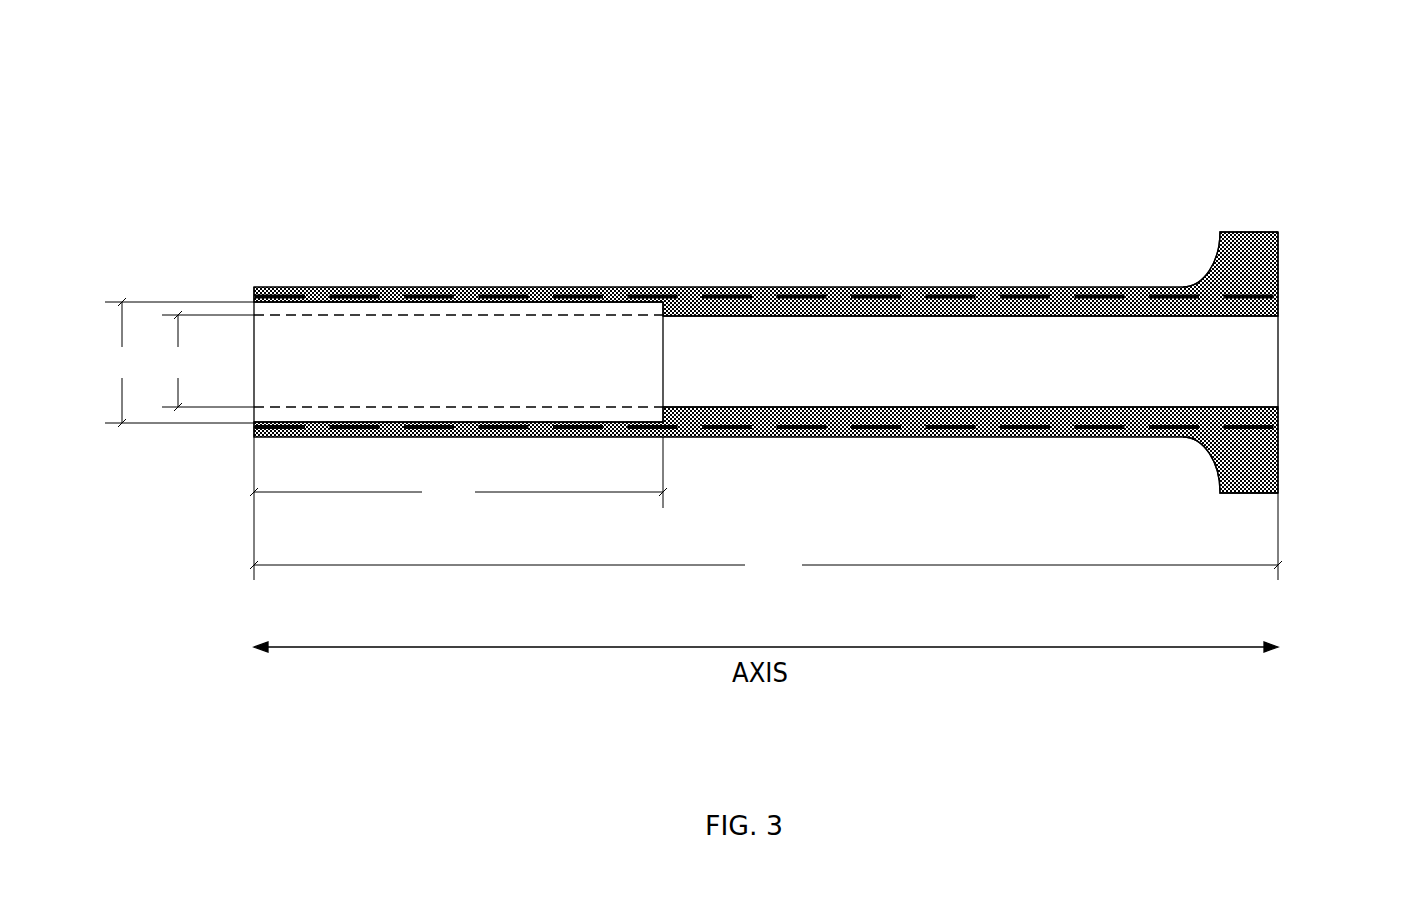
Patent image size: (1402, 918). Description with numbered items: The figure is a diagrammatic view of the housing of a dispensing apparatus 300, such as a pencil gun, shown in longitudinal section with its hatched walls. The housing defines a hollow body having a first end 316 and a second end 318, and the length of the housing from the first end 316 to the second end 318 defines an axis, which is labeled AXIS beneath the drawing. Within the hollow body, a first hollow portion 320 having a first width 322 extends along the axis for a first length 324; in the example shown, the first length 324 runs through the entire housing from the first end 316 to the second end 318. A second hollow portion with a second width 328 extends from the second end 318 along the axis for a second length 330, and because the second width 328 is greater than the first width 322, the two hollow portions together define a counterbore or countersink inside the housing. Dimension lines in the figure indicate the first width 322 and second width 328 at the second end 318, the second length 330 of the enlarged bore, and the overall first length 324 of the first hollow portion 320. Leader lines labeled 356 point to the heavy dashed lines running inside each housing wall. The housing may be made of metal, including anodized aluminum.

The dispensing apparatus 300 is at (226, 62).
The first end 316 is at (1300, 205).
The second end 318 is at (278, 253).
The first hollow portion 320 is at (239, 393).
The first width 322 is at (208, 361).
The first length 324 is at (766, 536).
The second width 328 is at (179, 362).
The second length 330 is at (458, 508).
The reinforcement layer 356 is at (957, 295).